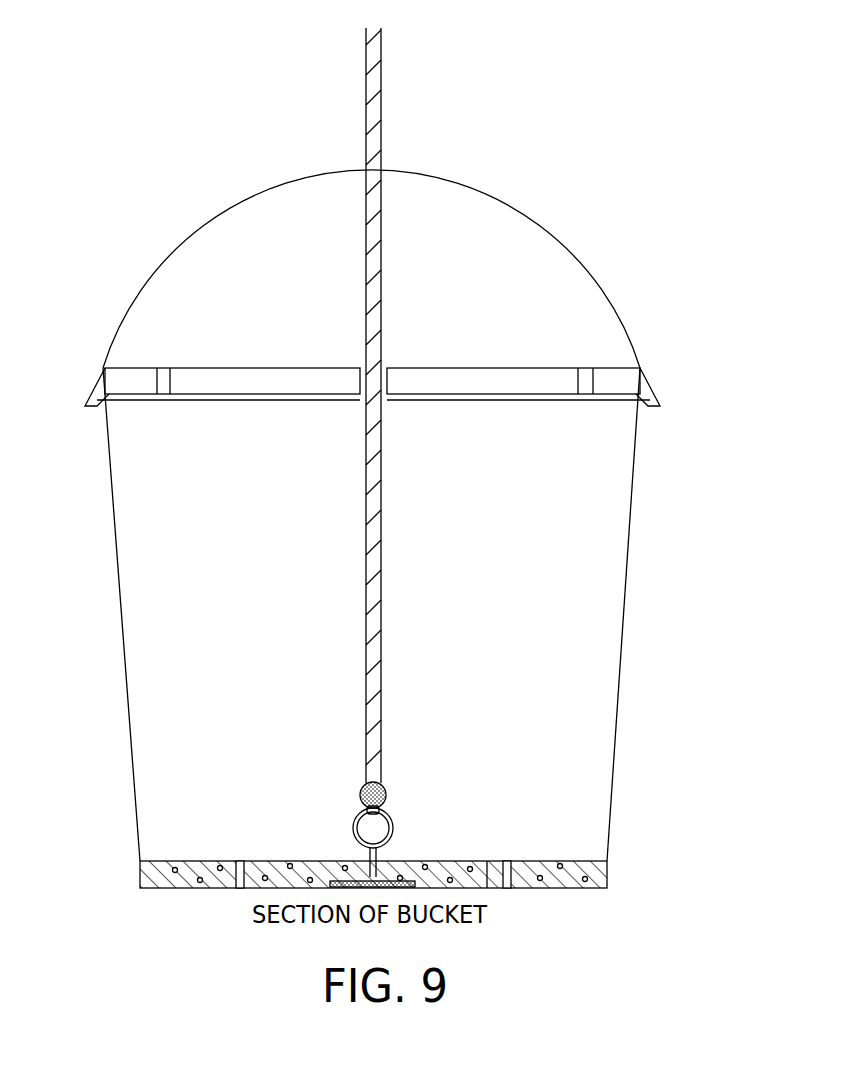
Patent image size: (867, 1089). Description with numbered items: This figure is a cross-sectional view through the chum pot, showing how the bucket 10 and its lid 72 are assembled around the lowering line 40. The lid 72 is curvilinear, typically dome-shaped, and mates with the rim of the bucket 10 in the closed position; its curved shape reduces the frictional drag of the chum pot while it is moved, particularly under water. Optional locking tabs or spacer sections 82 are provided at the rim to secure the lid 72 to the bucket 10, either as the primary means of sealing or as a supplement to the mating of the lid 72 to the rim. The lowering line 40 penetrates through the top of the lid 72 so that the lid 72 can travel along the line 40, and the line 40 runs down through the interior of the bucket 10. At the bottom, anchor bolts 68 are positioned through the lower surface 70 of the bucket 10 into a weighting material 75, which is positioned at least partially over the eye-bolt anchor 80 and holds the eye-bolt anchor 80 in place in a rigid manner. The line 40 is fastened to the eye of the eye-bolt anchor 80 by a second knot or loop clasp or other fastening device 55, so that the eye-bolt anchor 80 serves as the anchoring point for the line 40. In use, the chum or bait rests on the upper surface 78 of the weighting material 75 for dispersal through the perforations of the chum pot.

The bucket 10 is at (621, 696).
The lowering line 40 is at (383, 75).
The second knot or loop clasp or other fastening device 55 is at (386, 793).
The anchor bolts 68 is at (233, 888).
The lower surface 70 is at (573, 888).
The lid 72 is at (617, 312).
The weighting material 75 is at (482, 861).
The upper surface 78 is at (283, 861).
The eye-bolt anchor 80 is at (393, 826).
The locking tabs or spacer sections 82 is at (88, 395).